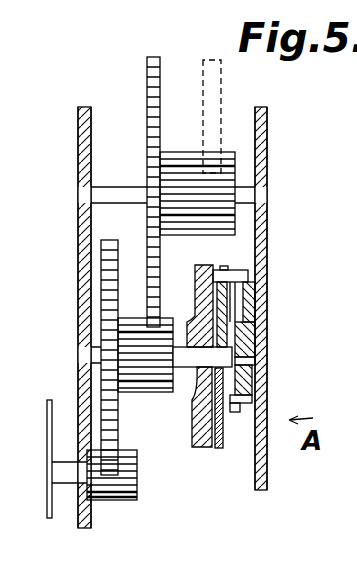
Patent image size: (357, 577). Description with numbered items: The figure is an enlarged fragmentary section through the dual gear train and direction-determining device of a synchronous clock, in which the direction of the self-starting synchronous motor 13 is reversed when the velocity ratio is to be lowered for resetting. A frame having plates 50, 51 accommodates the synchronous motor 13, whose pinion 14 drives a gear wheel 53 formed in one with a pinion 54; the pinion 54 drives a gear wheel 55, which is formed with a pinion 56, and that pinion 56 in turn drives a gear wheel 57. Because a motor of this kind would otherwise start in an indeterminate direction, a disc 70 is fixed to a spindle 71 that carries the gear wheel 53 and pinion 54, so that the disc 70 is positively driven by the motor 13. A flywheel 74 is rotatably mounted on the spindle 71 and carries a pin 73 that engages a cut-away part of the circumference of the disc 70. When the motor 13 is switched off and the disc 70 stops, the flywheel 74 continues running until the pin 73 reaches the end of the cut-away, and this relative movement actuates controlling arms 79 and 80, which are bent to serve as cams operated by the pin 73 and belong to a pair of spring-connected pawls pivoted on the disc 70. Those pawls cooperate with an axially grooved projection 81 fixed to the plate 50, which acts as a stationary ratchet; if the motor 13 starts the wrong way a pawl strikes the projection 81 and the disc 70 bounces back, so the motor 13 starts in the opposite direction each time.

The synchronous motor 13 is at (52, 518).
The pinion 14 is at (137, 490).
The plate 50 is at (267, 150).
The plate 51 is at (78, 286).
The gear wheel 53 is at (101, 385).
The pinion 54 is at (145, 390).
The gear wheel 55 is at (147, 90).
The pinion 56 is at (267, 185).
The gear wheel 57 is at (216, 117).
The disc 70 is at (219, 448).
The spindle 71 is at (184, 372).
The pin 73 is at (235, 278).
The flywheel 74 is at (212, 264).
The controlling arm 79 is at (233, 302).
The controlling arm 80 is at (246, 312).
The axially grooved projection 81 is at (254, 372).